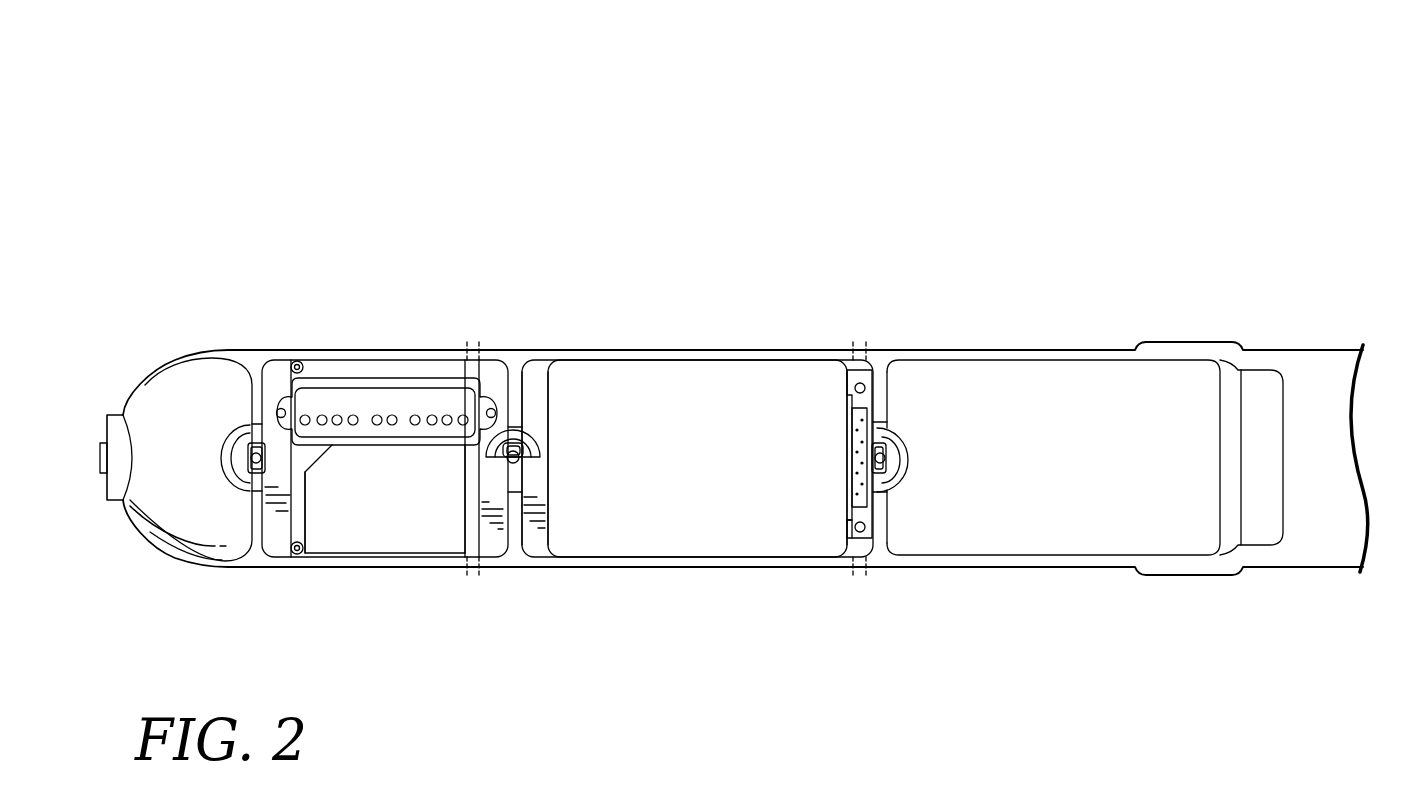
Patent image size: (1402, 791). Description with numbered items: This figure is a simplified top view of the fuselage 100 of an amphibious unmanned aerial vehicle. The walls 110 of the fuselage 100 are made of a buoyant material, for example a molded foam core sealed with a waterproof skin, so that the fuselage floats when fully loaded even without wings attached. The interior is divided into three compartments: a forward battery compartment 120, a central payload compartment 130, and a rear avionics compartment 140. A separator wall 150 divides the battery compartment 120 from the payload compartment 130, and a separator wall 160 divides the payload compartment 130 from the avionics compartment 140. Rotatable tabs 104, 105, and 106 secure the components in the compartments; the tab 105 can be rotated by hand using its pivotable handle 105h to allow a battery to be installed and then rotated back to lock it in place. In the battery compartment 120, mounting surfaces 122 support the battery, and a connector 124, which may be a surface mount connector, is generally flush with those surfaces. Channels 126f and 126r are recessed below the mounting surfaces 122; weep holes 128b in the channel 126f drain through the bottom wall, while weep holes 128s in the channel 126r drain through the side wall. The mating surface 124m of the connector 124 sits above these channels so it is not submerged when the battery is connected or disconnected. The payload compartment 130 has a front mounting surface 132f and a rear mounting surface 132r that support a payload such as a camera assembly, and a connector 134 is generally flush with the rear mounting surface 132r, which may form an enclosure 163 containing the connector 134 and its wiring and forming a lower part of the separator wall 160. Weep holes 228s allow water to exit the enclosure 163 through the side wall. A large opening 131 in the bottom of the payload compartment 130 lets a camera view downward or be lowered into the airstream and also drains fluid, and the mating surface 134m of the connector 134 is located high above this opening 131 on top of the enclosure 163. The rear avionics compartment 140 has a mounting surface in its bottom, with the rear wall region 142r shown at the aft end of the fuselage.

The fuselage 100 is at (1058, 262).
The walls 110 is at (1311, 350).
The tab 104 is at (238, 456).
The tab 105 is at (526, 425).
The pivotable handle 105h is at (522, 462).
The tab 106 is at (900, 448).
The forward battery compartment 120 is at (418, 560).
The mounting surfaces 122 is at (372, 545).
The connector 124 is at (368, 386).
The mating surface 124m is at (398, 398).
The channel 126f is at (300, 483).
The channel 126r is at (470, 513).
The weep holes 128b is at (298, 361).
The weep holes 128s is at (468, 352).
The central payload compartment 130 is at (697, 560).
The large opening 131 is at (627, 523).
The front mounting surface 132f is at (534, 373).
The rear mounting surface 132r is at (853, 372).
The connector 134 is at (849, 467).
The mating surface 134m is at (850, 447).
The rear avionics compartment 140 is at (1017, 560).
The rear wall 142r is at (1264, 530).
The separator wall 150 is at (520, 393).
The separator wall 160 is at (884, 396).
The enclosure 163 is at (847, 508).
The weep holes 228s is at (853, 350).